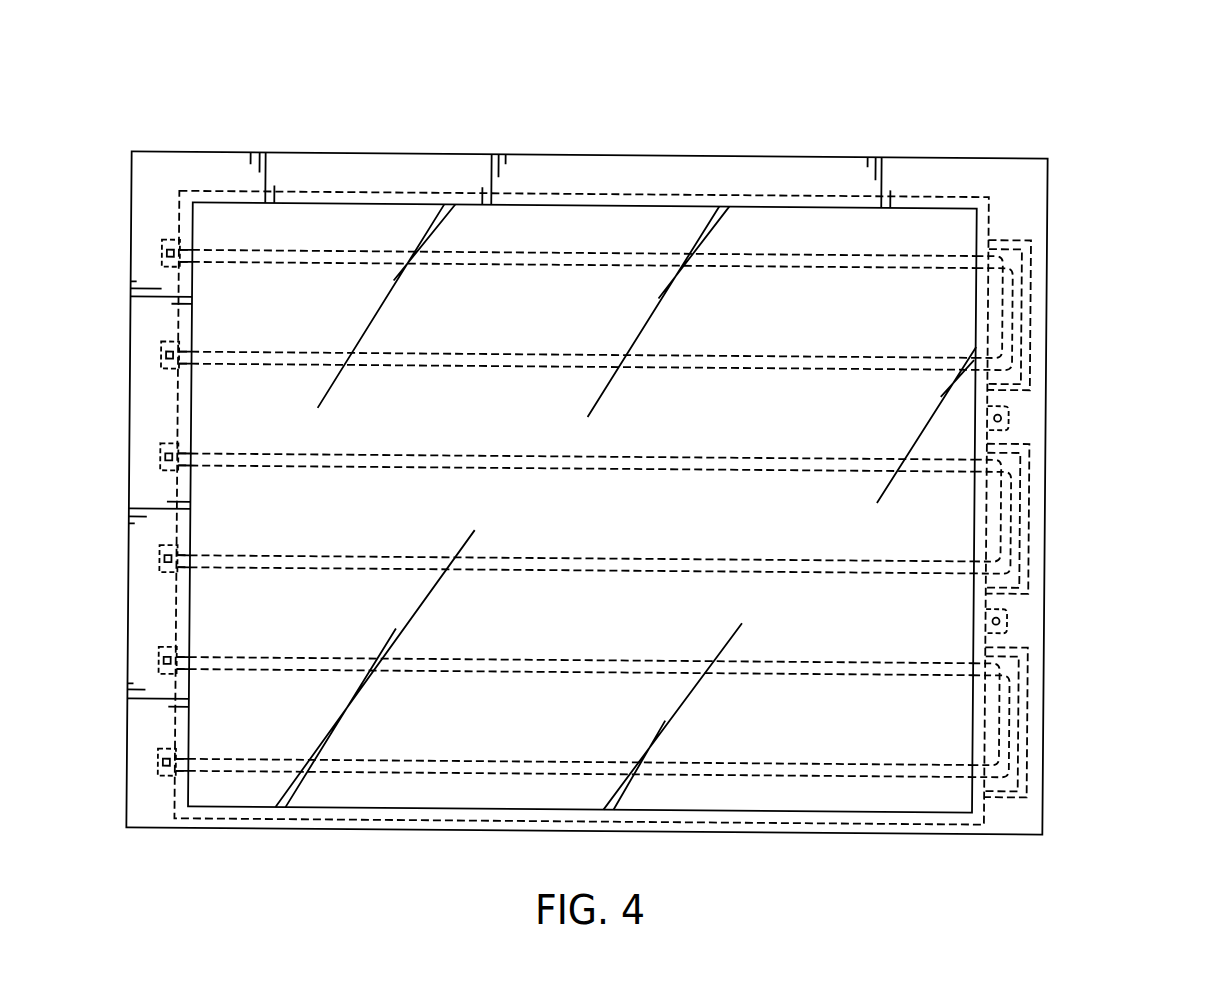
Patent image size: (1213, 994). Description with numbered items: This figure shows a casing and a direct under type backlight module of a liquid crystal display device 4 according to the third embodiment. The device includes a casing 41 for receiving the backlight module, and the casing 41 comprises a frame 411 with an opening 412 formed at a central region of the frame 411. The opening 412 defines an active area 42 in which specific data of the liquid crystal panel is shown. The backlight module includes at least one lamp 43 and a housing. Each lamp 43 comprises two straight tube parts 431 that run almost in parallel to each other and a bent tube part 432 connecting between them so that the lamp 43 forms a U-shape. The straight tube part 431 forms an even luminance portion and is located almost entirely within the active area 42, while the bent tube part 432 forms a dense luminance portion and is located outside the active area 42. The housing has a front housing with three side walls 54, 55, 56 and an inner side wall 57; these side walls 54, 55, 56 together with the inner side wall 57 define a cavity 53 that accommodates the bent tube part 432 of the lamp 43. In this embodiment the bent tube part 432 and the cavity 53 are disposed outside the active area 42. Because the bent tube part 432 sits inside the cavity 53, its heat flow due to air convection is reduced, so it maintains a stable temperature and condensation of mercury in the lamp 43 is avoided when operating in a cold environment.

The liquid crystal display device 4 is at (108, 122).
The casing 41 is at (1074, 216).
The frame 411 is at (1028, 612).
The opening 412 is at (617, 232).
The active area 42 is at (758, 222).
The lamp 43 is at (514, 232).
The straight tube part 431 is at (359, 257).
The bent tube part 432 is at (1003, 518).
The cavity 53 is at (1027, 249).
The side wall 54 is at (1002, 237).
The side wall 55 is at (1029, 302).
The side wall 56 is at (1012, 402).
The inner side wall 57 is at (986, 303).